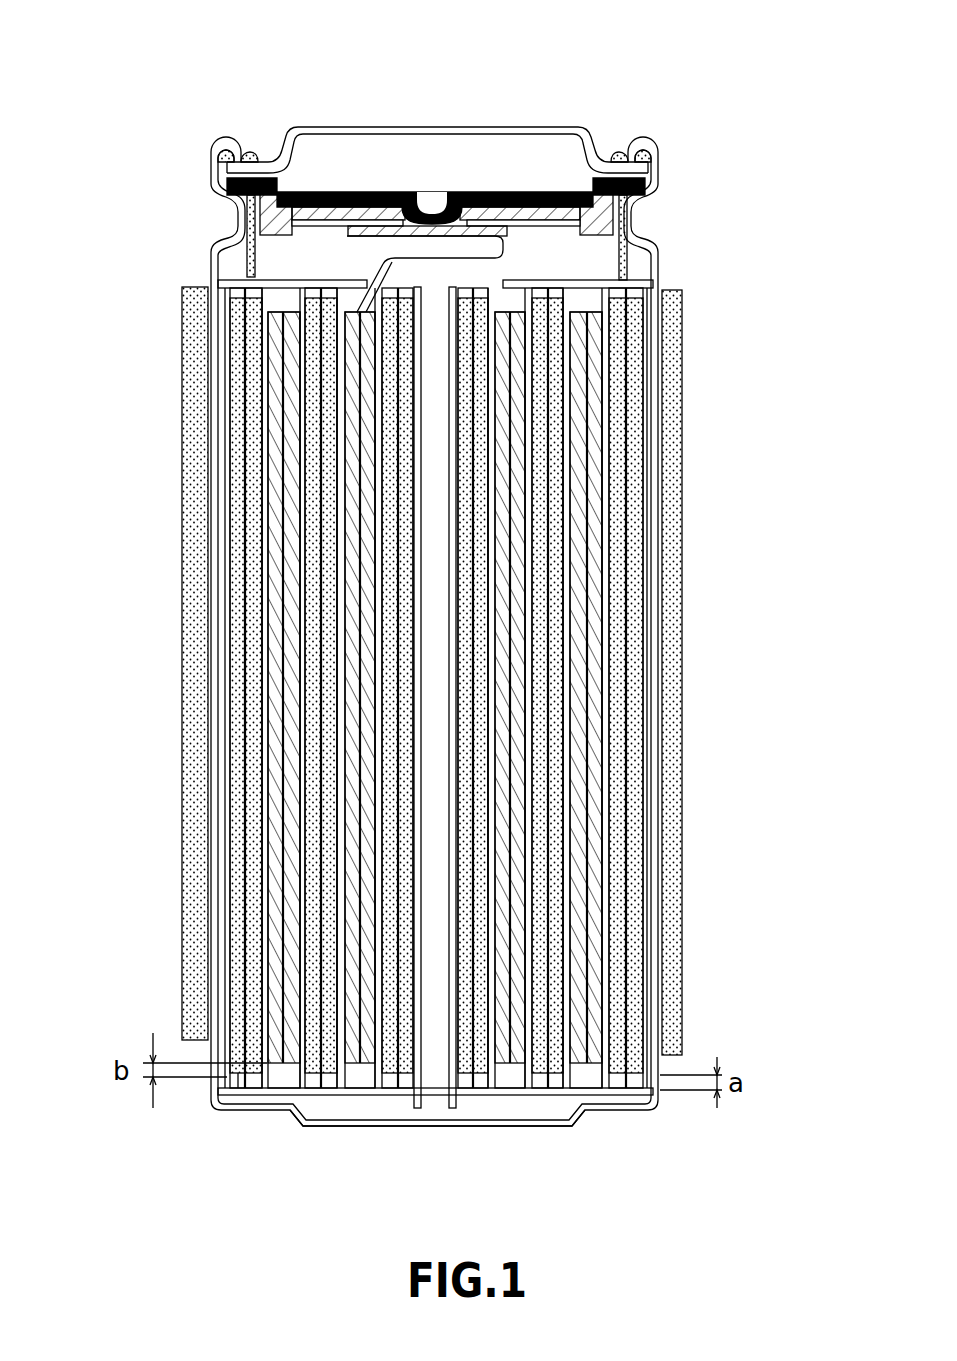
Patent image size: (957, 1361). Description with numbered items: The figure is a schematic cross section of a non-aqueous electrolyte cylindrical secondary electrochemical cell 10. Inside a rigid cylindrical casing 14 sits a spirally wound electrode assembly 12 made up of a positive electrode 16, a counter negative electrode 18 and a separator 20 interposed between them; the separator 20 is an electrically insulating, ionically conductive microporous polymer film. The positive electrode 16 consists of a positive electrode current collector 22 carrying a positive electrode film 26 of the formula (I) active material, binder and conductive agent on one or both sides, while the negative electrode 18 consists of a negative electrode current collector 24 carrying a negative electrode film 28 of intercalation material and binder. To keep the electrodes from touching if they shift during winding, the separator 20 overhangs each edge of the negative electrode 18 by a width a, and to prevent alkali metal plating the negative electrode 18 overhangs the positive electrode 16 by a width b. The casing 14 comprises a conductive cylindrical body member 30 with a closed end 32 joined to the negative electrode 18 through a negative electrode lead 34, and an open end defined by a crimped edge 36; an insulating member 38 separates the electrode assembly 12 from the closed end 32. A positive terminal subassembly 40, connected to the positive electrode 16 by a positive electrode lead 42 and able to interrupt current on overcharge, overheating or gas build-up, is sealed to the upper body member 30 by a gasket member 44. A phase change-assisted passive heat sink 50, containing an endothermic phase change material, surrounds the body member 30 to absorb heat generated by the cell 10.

The secondary electrochemical cell 10 is at (156, 116).
The electrode assembly 12 is at (643, 355).
The cylindrical casing 14 is at (658, 427).
The positive electrode 16 is at (537, 700).
The negative electrode 18 is at (518, 688).
The separator 20 is at (607, 705).
The positive electrode current collector 22 is at (590, 617).
The negative electrode current collector 24 is at (630, 527).
The positive electrode film 26 is at (597, 580).
The negative electrode film 28 is at (637, 490).
The cylindrical body member 30 is at (210, 888).
The closed end 32 is at (267, 1115).
The negative electrode lead 34 is at (240, 1078).
The crimped edge 36 is at (628, 153).
The insulating member 38 is at (638, 1093).
The positive terminal subassembly 40 is at (373, 195).
The positive electrode lead 42 is at (505, 250).
The gasket member 44 is at (640, 152).
The phase change-assisted passive heat sink 50 is at (182, 618).